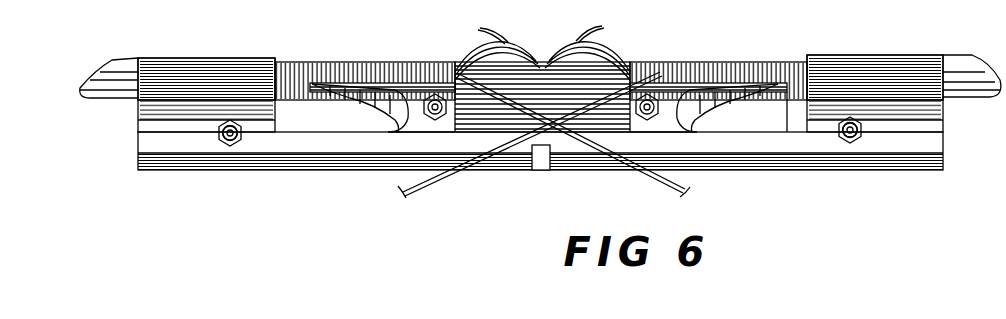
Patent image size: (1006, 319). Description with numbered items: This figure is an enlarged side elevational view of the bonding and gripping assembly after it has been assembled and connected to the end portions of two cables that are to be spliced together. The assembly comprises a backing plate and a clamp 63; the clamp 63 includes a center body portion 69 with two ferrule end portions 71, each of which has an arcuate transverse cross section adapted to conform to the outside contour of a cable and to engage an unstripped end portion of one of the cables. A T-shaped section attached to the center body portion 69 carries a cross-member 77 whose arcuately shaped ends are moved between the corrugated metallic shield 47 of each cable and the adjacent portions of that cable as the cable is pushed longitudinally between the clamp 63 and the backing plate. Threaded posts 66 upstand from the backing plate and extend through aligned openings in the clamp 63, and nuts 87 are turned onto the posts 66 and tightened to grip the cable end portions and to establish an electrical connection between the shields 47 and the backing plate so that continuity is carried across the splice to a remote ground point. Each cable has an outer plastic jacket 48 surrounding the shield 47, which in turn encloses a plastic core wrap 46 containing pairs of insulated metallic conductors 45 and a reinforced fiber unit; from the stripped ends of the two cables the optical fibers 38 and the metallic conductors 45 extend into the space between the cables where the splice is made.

The optical fiber 38 is at (416, 185).
The insulated metallic conductors 45 is at (538, 40).
The plastic core wrap 46 is at (362, 93).
The corrugated metallic shield 47 is at (385, 60).
The plastic jacket 48 is at (112, 62).
The clamp 63 is at (136, 122).
The threaded posts 66 is at (222, 131).
The center body portion 69 is at (318, 150).
The ferrule end portions 71 is at (208, 66).
The cross-member 77 is at (540, 62).
The nuts 87 is at (236, 147).